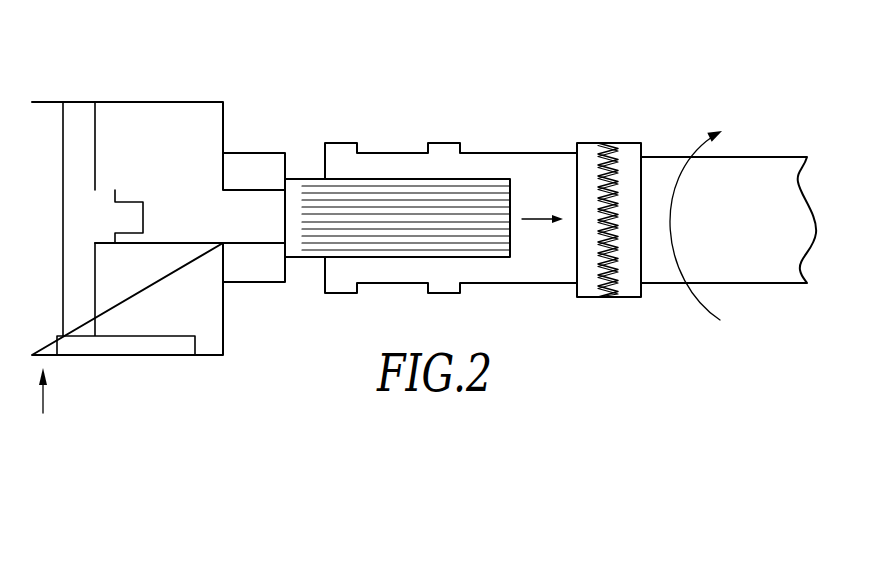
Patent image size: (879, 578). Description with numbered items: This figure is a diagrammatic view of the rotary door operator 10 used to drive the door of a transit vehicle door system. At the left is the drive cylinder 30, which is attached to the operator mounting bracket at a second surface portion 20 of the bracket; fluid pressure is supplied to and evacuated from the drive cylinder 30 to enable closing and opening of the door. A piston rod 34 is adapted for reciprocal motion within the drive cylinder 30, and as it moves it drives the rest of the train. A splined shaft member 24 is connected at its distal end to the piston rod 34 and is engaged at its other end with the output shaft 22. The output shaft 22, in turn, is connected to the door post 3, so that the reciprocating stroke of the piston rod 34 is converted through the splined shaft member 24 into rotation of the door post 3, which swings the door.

The door post 3 is at (770, 275).
The rotary door operator 10 is at (387, 105).
The second surface portion 20 is at (265, 152).
The output shaft 22 is at (513, 153).
The splined shaft member 24 is at (398, 250).
The drive cylinder 30 is at (142, 101).
The piston rod 34 is at (182, 235).